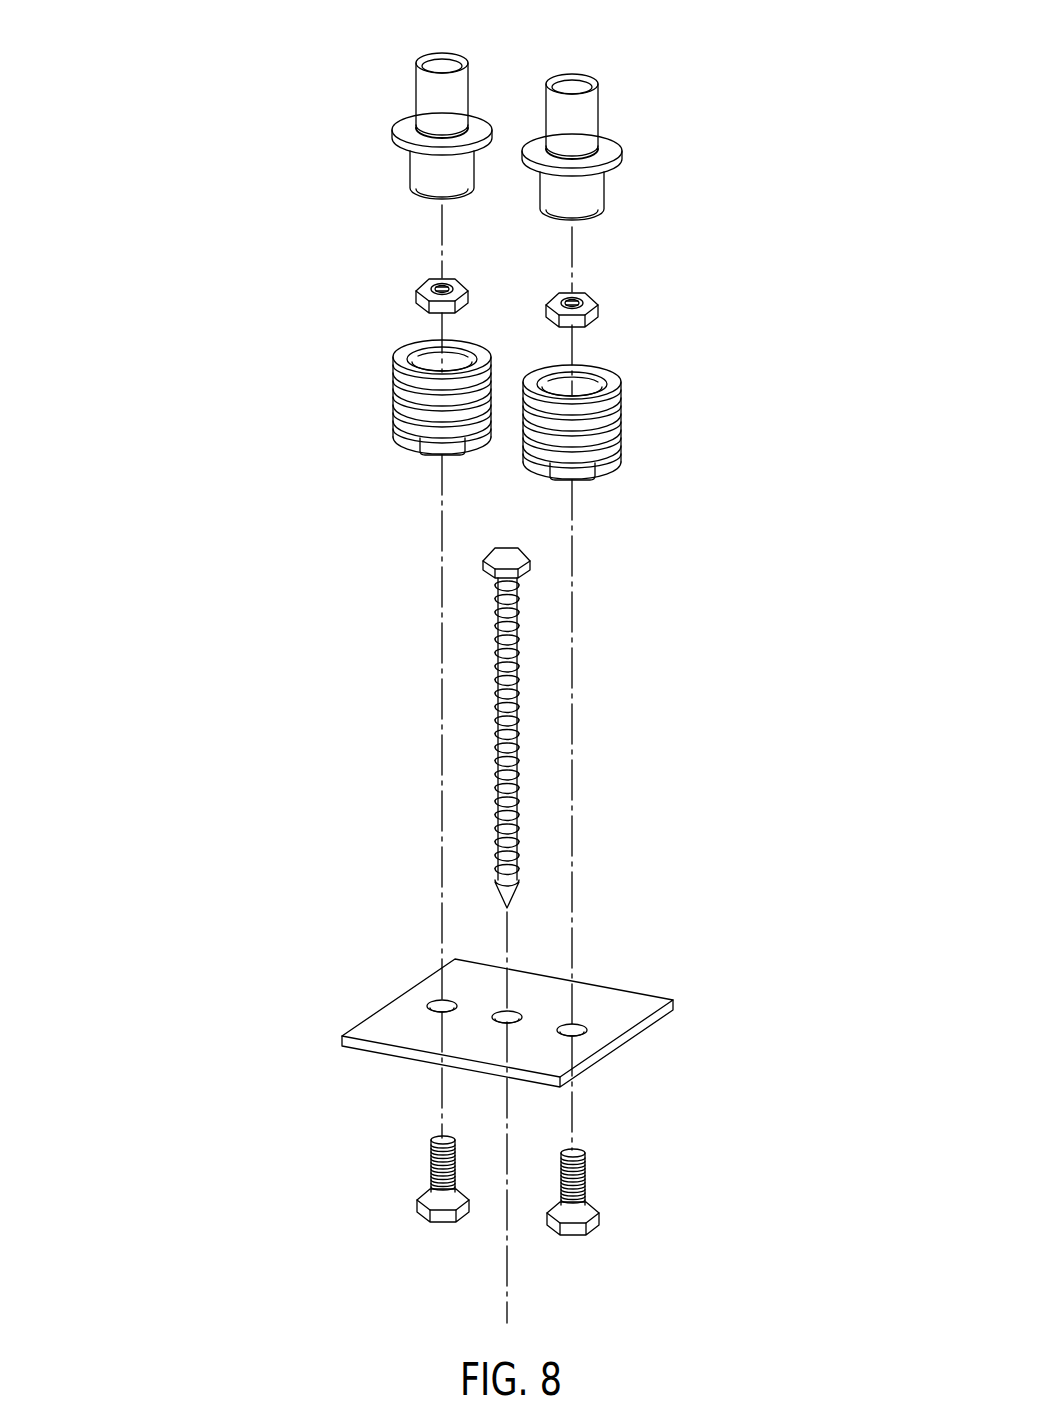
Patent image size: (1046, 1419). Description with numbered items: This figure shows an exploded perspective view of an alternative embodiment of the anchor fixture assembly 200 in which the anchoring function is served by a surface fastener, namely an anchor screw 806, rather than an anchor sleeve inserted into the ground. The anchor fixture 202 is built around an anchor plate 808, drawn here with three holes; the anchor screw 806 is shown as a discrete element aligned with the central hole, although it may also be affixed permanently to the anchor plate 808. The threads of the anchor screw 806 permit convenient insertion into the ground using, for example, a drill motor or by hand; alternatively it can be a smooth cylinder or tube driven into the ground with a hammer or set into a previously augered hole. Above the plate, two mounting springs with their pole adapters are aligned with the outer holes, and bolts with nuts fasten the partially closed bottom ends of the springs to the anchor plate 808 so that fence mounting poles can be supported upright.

The anchor fixture assembly 200 is at (258, 116).
The anchor screw 806 is at (517, 800).
The anchor fixture 202 is at (355, 1006).
The anchor plate 808 is at (638, 997).